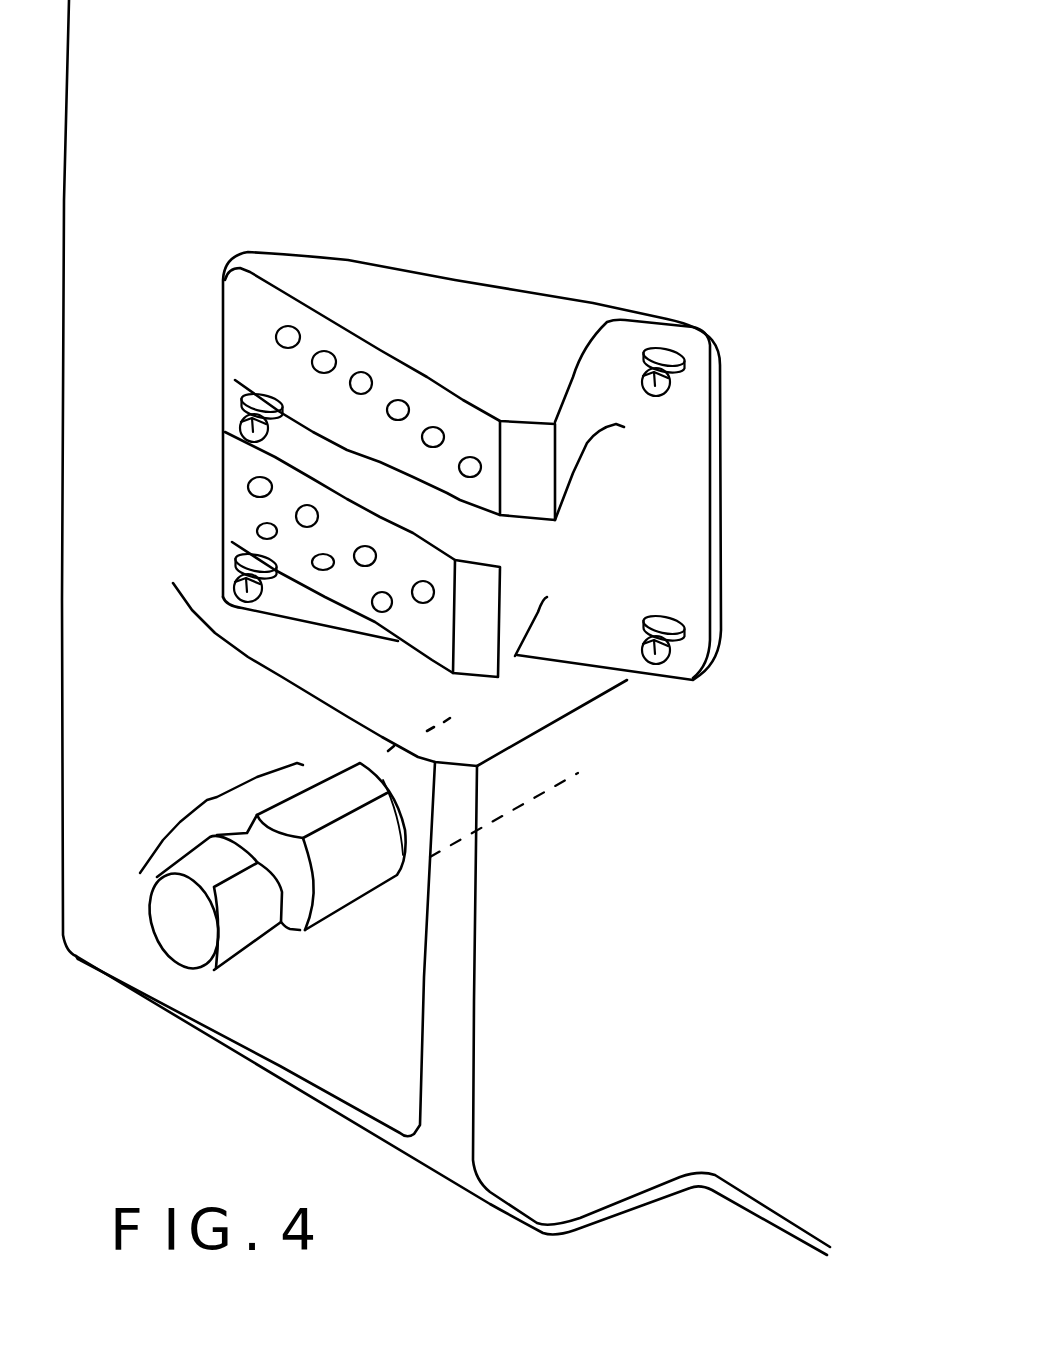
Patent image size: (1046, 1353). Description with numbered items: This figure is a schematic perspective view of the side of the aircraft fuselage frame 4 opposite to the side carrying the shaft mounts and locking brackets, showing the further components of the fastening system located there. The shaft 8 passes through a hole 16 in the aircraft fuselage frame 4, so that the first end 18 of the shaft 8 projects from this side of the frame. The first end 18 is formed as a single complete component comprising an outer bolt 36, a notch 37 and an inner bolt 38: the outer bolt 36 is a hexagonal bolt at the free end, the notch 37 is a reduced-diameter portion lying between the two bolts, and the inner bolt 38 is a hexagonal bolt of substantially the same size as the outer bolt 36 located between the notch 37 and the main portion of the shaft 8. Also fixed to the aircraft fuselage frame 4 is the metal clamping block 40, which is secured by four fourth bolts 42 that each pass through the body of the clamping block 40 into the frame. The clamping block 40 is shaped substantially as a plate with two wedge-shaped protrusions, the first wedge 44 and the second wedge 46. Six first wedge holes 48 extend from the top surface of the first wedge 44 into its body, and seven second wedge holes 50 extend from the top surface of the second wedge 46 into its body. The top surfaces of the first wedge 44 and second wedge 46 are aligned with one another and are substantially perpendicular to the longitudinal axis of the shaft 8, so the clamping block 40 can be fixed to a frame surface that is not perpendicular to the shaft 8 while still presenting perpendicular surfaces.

The aircraft fuselage frame 4 is at (172, 702).
The shaft 8 is at (547, 788).
The hole 16 is at (422, 840).
The first end of the shaft 18 is at (271, 893).
The outer bolt 36 is at (242, 953).
The notch 37 is at (293, 912).
The inner bolt 38 is at (337, 900).
The clamping block 40 is at (458, 280).
The fourth bolts 42 is at (244, 406).
The first wedge 44 is at (425, 378).
The second wedge 46 is at (413, 542).
The first wedge holes 48 is at (287, 348).
The second wedge holes 50 is at (252, 479).